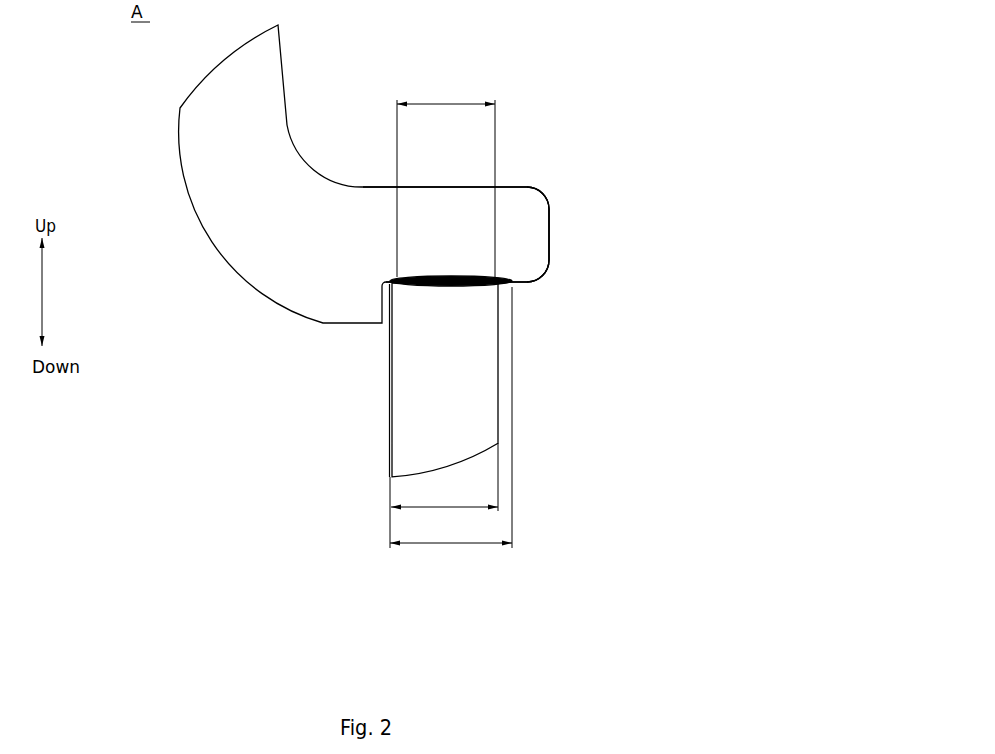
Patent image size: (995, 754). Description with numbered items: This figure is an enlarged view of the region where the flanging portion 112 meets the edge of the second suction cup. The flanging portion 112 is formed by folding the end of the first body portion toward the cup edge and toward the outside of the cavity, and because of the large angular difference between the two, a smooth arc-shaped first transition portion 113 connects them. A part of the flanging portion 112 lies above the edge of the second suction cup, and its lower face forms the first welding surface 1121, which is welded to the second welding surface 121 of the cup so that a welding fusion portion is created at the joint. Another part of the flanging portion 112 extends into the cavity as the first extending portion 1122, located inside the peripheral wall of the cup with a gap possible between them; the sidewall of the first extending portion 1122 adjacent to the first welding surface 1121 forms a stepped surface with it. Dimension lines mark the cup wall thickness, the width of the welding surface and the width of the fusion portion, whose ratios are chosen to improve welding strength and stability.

The flanging portion 112 is at (447, 230).
The first welding surface 1121 is at (548, 226).
The first extending portion 1122 is at (370, 308).
The first transition portion 113 is at (240, 243).
The second welding surface 121 is at (513, 283).